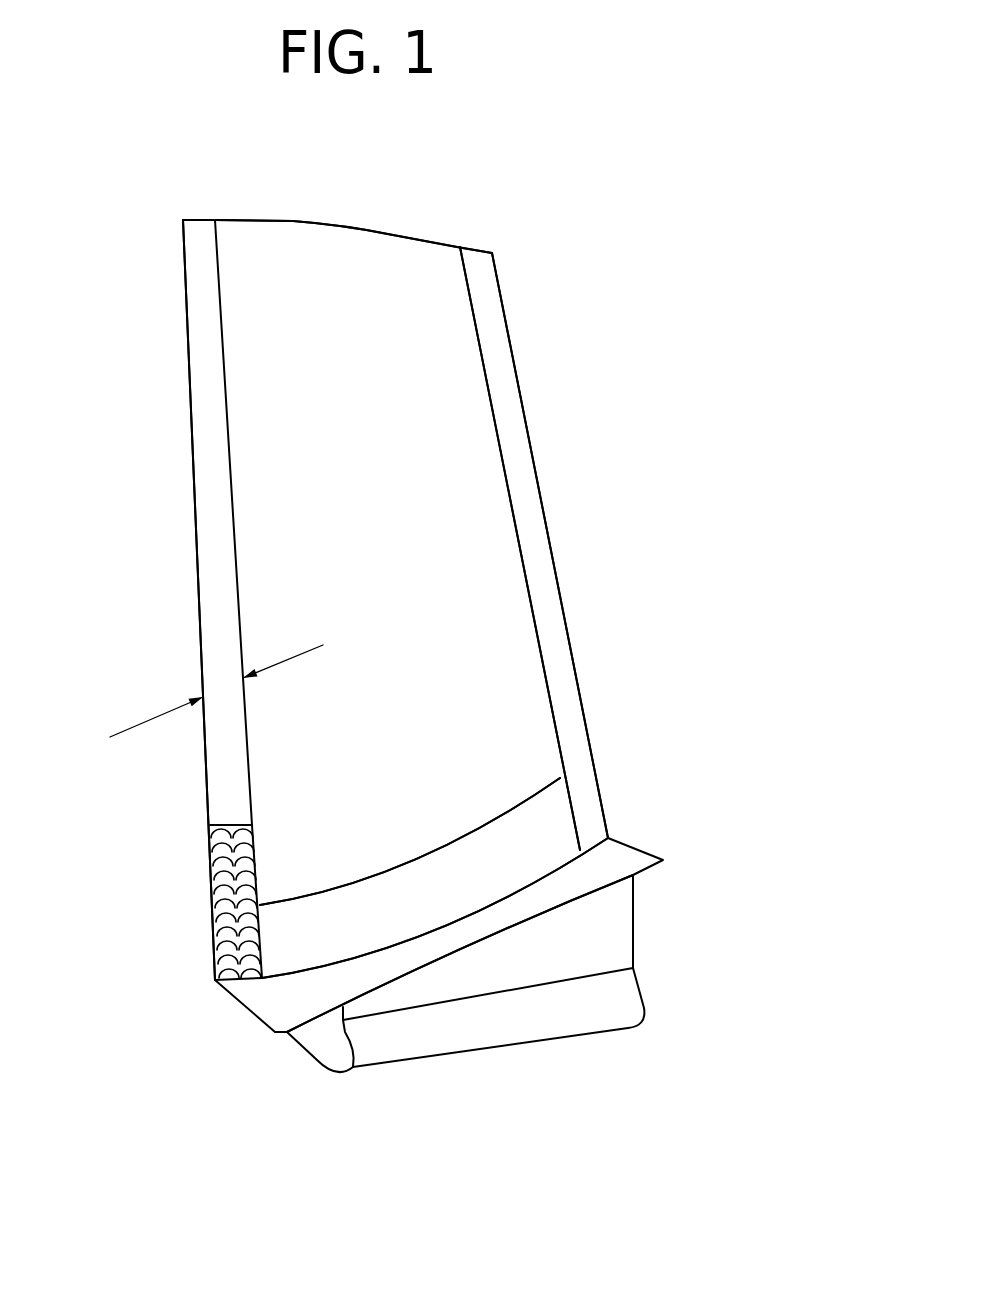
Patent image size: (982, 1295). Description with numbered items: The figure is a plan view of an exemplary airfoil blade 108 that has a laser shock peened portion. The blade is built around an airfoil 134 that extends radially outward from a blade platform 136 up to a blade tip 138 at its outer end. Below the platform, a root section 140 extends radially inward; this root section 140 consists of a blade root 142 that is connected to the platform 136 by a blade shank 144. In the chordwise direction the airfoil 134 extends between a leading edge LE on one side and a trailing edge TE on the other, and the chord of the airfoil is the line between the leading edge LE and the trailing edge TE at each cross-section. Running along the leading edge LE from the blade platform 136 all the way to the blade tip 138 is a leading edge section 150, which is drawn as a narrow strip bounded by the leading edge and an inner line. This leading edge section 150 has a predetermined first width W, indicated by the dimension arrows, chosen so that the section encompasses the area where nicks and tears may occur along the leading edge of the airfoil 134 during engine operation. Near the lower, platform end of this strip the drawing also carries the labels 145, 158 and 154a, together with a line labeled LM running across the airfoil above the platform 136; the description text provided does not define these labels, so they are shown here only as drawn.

The airfoil blade 108 is at (525, 254).
The airfoil 134 is at (441, 635).
The blade platform 136 is at (633, 858).
The blade tip 138 is at (340, 224).
The root section 140 is at (633, 968).
The blade root 142 is at (320, 1048).
The blade shank 144 is at (633, 913).
The weld bead deposit 145 is at (210, 867).
The leading edge section 150 is at (250, 723).
The repaired root region of leading edge 154a is at (262, 937).
The weld bead 158 is at (243, 828).
The leading edge LE is at (193, 435).
The trailing edge TE is at (553, 563).
The lower mid-span line LM is at (398, 863).
The first width W is at (138, 722).